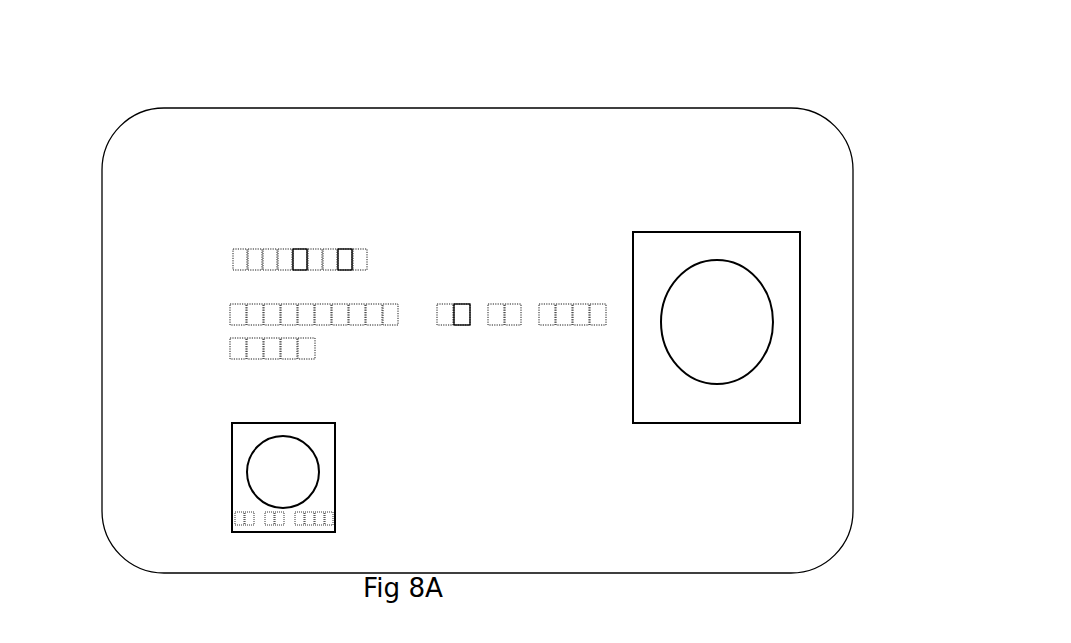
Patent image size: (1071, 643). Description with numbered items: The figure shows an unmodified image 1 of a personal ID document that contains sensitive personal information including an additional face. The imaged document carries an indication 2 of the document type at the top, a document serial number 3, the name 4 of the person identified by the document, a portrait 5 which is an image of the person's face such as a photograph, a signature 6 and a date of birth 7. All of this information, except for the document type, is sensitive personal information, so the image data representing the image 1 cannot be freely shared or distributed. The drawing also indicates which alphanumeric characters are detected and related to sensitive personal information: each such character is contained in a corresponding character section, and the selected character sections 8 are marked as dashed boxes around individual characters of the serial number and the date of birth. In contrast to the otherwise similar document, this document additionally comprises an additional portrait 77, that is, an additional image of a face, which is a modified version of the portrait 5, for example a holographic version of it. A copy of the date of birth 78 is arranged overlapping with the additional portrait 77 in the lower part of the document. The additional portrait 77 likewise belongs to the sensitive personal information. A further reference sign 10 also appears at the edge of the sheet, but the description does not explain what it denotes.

The unmodified image 1 is at (816, 115).
The indication of the document type 2 is at (688, 176).
The document serial number 3 is at (226, 246).
The name 4 is at (221, 322).
The portrait 5 is at (795, 381).
The signature 6 is at (492, 463).
The date of birth 7 is at (509, 298).
The selected character sections 8 is at (455, 300).
The security document system 10 is at (900, 642).
The additional portrait 77 is at (226, 480).
The copy of the date of birth 78 is at (256, 529).